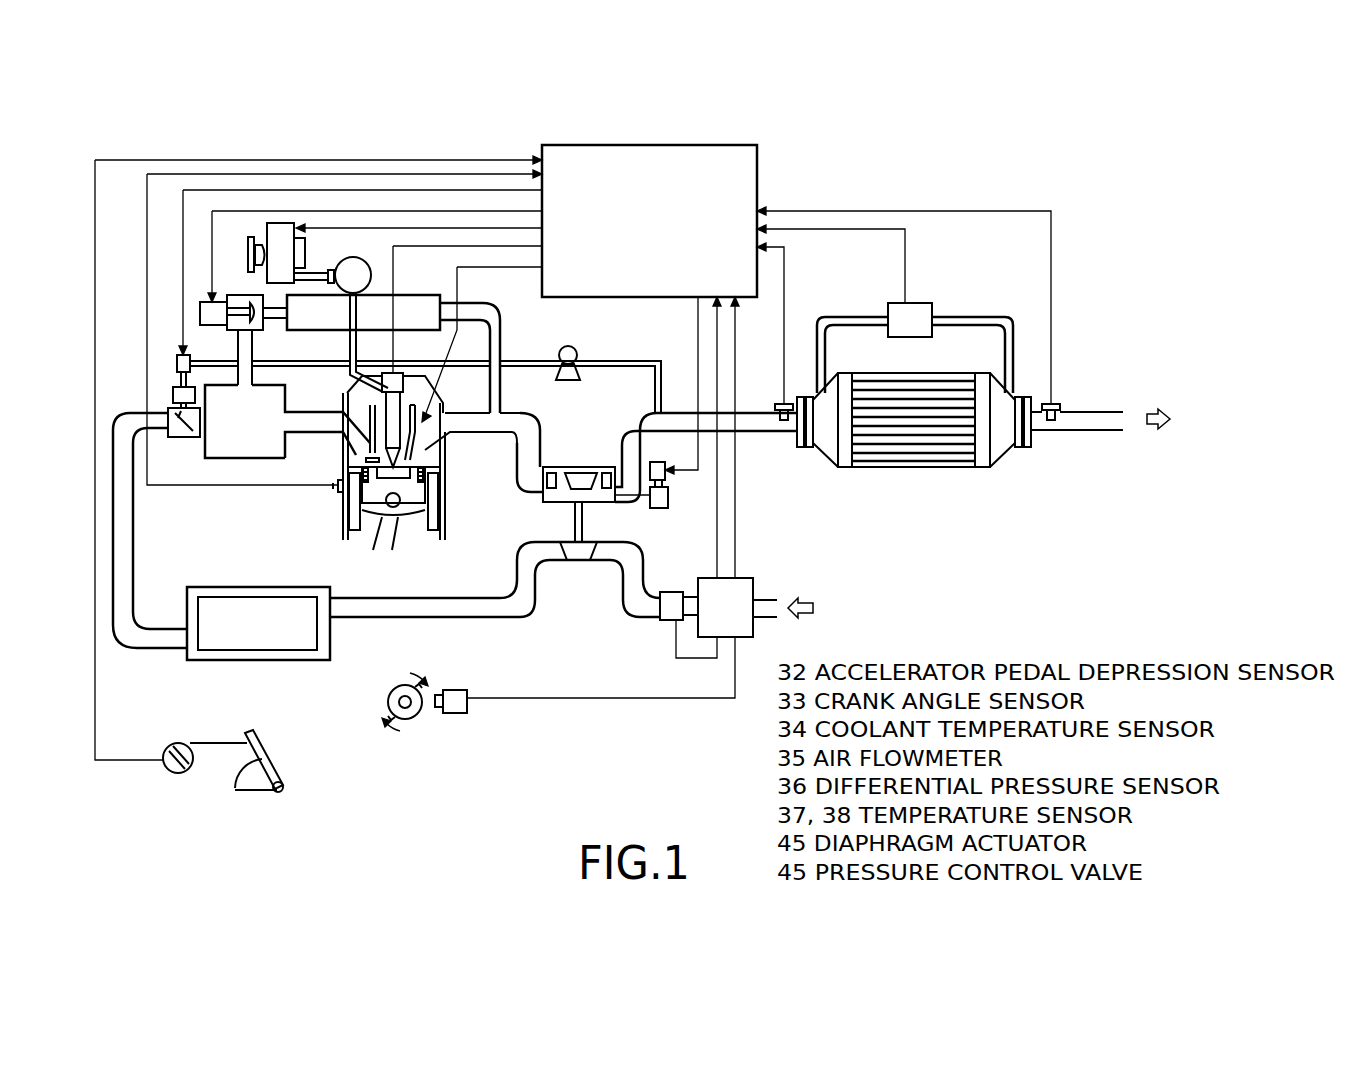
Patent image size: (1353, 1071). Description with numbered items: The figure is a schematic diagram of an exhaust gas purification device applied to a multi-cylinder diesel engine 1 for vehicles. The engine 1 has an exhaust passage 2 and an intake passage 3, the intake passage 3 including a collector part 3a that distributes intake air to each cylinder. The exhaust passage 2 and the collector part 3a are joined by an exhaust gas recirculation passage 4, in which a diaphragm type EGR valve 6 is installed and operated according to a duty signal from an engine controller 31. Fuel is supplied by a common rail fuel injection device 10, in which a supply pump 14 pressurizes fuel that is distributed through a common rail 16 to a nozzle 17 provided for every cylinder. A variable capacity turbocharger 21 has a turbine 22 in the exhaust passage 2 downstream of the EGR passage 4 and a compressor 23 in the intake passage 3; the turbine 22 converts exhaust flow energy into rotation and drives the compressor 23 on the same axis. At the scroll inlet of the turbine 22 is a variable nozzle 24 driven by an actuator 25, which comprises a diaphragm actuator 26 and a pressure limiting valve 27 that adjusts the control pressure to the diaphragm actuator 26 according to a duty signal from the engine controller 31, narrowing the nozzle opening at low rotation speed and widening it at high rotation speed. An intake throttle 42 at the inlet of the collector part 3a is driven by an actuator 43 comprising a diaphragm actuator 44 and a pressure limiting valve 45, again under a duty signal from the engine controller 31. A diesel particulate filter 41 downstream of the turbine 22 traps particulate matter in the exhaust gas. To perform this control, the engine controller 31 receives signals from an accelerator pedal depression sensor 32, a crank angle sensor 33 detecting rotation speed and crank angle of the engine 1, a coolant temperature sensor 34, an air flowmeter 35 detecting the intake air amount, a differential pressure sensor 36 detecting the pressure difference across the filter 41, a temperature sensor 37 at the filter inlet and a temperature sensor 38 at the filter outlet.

The diesel engine 1 is at (457, 544).
The exhaust passage 2 is at (527, 430).
The intake passage 3 is at (307, 415).
The collector part 3a is at (217, 445).
The exhaust gas recirculation passage 4 is at (500, 337).
The EGR valve 6 is at (240, 329).
The common rail fuel injection device 10 is at (328, 250).
The supply pump 14 is at (279, 224).
The common rail 16 is at (357, 262).
The nozzle 17 is at (395, 382).
The variable capacity turbocharger 21 is at (588, 572).
The turbine 22 is at (570, 482).
The compressor 23 is at (577, 553).
The variable nozzle 24 is at (543, 483).
The actuator 25 is at (680, 490).
The diaphragm actuator 26 is at (652, 500).
The pressure limiting valve 27 is at (670, 463).
The engine controller 31 is at (653, 145).
The accelerator pedal depression sensor 32 is at (167, 773).
The crank angle sensor 33 is at (457, 713).
The coolant temperature sensor 34 is at (338, 488).
The air flowmeter 35 is at (667, 622).
The differential pressure sensor 36 is at (917, 307).
The temperature sensor 37 is at (778, 404).
The temperature sensor 38 is at (1056, 404).
The diesel particulate filter 41 is at (950, 455).
The intake throttle 42 is at (113, 423).
The actuator 43 is at (157, 386).
The diaphragm actuator 44 is at (173, 396).
The pressure limiting valve 45 is at (177, 363).